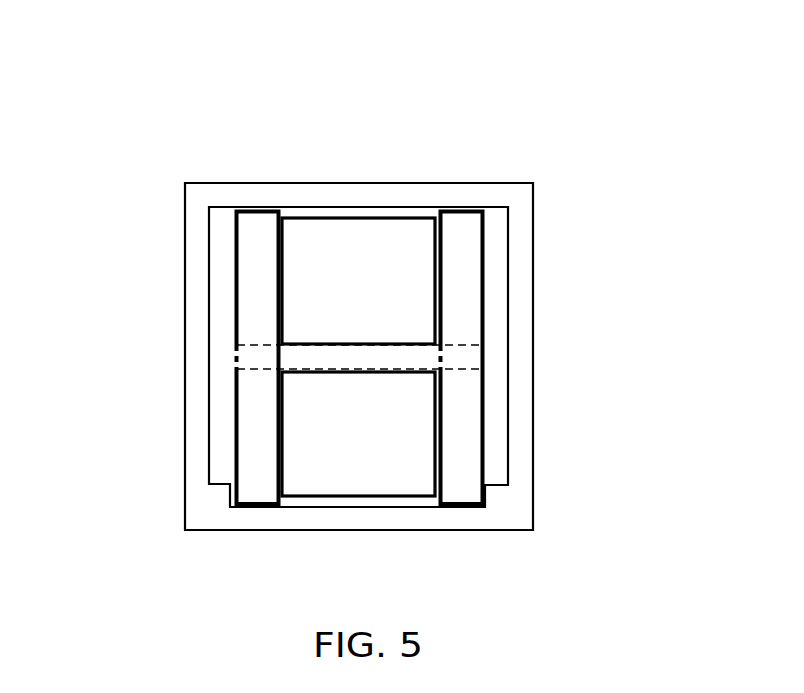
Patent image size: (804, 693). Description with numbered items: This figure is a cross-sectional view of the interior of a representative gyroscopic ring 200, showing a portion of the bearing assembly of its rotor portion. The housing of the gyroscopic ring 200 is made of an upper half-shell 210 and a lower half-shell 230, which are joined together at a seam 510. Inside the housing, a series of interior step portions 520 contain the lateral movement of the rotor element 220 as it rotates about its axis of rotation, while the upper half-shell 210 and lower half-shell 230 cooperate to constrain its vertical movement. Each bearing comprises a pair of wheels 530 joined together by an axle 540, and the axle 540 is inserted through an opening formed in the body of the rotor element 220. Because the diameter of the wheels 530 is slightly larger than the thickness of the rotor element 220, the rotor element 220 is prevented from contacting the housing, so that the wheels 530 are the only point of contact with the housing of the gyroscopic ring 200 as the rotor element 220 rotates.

The gyroscopic ring 200 is at (193, 106).
The upper half-shell 210 is at (358, 183).
The rotor element 220 is at (377, 292).
The lower half-shell 230 is at (357, 531).
The seam 510 is at (209, 357).
The interior step portions 520 is at (232, 230).
The wheels 530 is at (257, 210).
The axle 540 is at (245, 345).